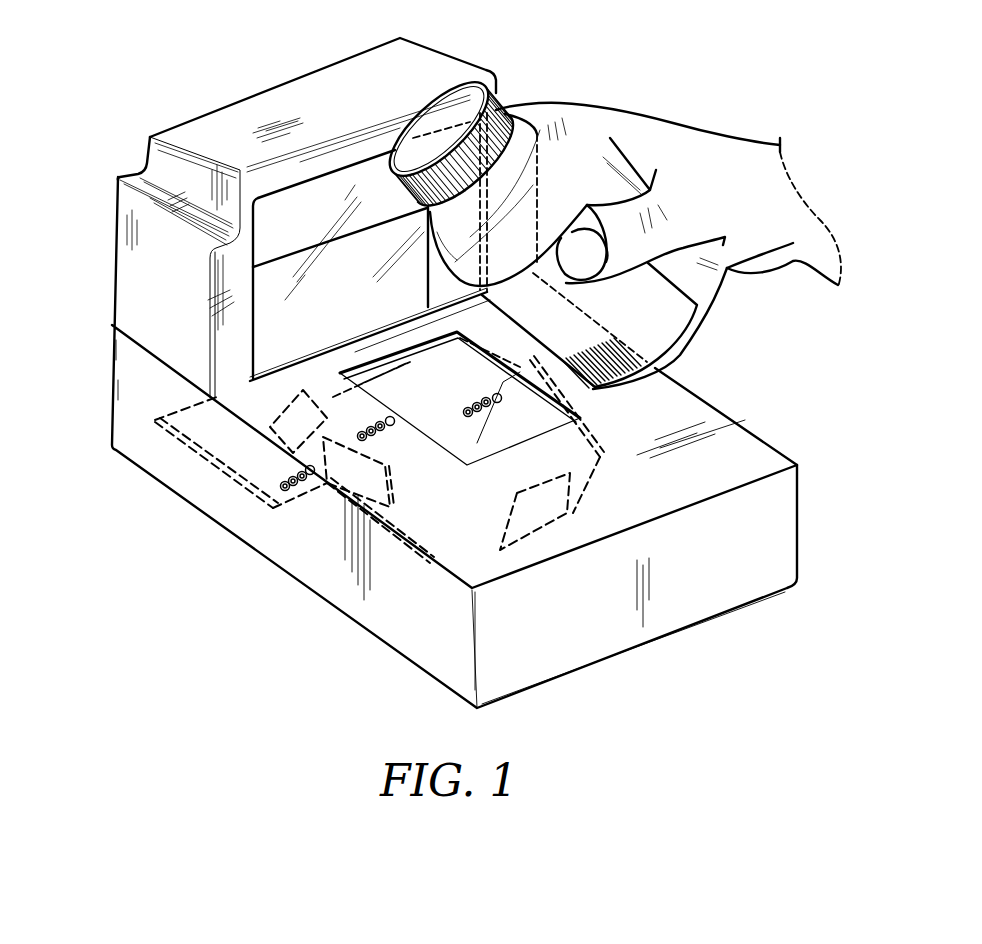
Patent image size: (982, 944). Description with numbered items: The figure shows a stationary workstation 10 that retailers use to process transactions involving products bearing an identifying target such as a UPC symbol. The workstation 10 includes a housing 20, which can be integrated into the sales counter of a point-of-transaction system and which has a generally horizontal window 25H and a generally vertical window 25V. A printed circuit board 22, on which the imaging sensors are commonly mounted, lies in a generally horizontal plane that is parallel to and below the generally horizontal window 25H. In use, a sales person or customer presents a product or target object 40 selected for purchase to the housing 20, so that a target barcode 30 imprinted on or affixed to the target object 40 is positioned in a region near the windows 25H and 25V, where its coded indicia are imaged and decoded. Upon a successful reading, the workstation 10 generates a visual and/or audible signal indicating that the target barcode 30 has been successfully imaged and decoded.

The workstation 10 is at (160, 35).
The housing 20 is at (192, 133).
The printed circuit board 22 is at (217, 440).
The generally vertical window 25V is at (275, 284).
The generally horizontal window 25H is at (455, 443).
The target barcode 30 is at (620, 352).
The target object 40 is at (567, 170).